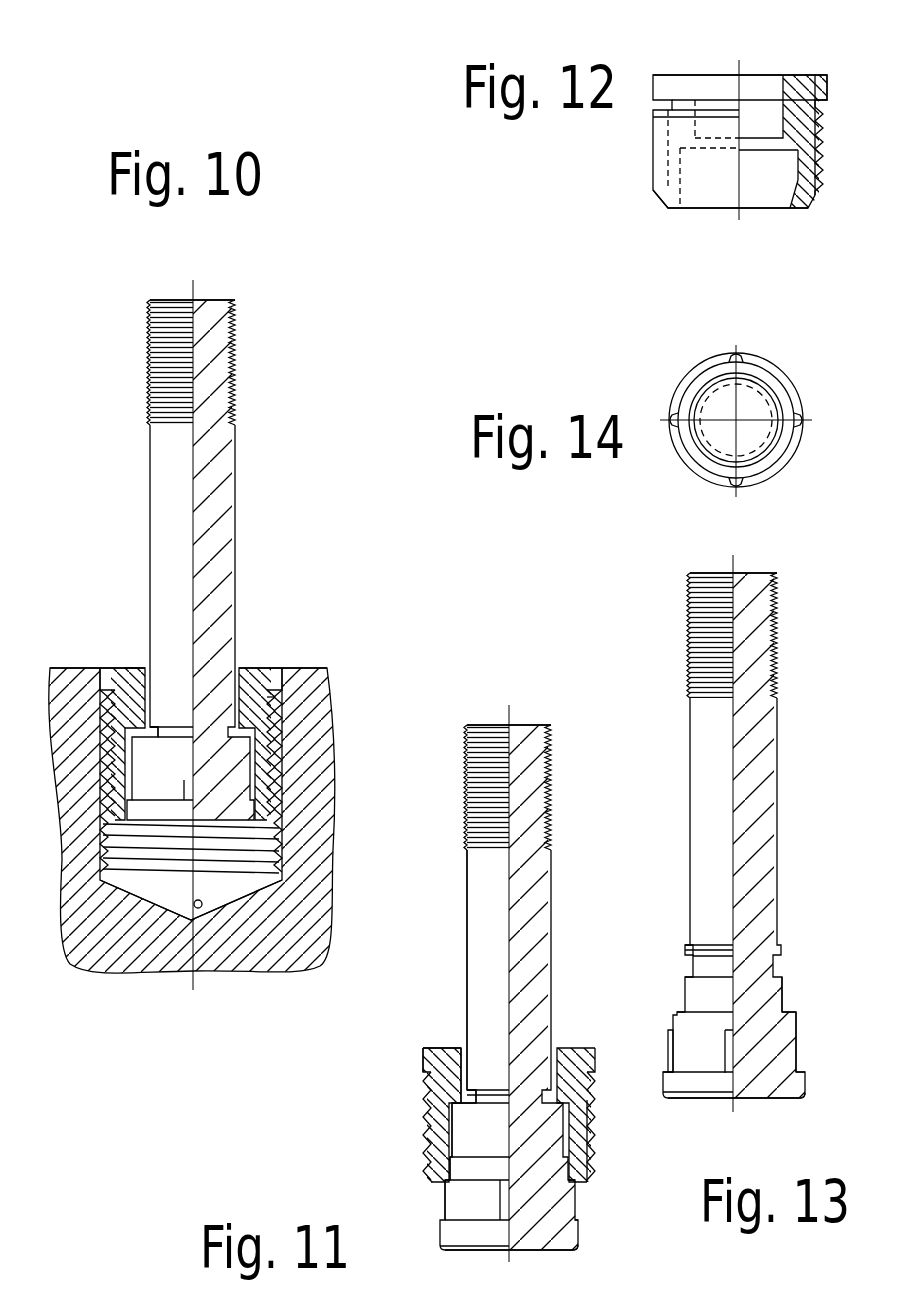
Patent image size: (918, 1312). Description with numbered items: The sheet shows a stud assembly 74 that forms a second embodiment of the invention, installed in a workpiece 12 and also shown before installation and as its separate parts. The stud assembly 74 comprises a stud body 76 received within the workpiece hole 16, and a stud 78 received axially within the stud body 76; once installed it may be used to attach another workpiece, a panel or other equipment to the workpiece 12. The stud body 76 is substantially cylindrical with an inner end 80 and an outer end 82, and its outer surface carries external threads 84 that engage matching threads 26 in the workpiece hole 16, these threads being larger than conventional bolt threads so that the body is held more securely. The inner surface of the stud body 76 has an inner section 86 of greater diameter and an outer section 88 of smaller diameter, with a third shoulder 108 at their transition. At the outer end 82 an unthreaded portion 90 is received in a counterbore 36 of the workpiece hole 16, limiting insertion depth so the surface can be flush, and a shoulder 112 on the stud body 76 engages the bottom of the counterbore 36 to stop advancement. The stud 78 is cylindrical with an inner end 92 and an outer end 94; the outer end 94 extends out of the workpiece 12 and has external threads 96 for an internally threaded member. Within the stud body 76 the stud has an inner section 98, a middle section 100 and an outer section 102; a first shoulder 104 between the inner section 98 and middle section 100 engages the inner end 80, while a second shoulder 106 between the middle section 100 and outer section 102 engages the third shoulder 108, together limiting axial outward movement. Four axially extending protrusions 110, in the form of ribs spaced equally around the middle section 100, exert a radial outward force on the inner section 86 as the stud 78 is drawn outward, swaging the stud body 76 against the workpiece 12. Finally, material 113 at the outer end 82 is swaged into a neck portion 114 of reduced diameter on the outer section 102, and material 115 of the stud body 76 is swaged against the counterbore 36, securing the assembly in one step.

In FIG. 10, the workpiece 12 is at (98, 667).
In FIG. 10, the workpiece hole 16 is at (210, 906).
In FIG. 10, the threads 26 is at (120, 866).
In FIG. 10, the counterbore 36 is at (95, 667).
In FIG. 10, the stud assembly 74 is at (122, 480).
In FIG. 11, the stud assembly 74 is at (455, 914).
In FIG. 10, the stud body 76 is at (268, 668).
In FIG. 11, the stud body 76 is at (588, 1050).
In FIG. 12, the stud body 76 is at (653, 158).
In FIG. 11, the stud 78 is at (466, 964).
In FIG. 14, the stud 78 is at (753, 378).
In FIG. 13, the stud 78 is at (692, 776).
In FIG. 11, the inner end 80 is at (448, 1182).
In FIG. 12, the inner end 80 is at (708, 208).
In FIG. 10, the outer end 82 is at (113, 666).
In FIG. 11, the outer end 82 is at (452, 1047).
In FIG. 12, the outer end 82 is at (722, 73).
In FIG. 11, the external threads 84 is at (590, 1134).
In FIG. 12, the external threads 84 is at (822, 155).
In FIG. 12, the inner section 86 is at (797, 182).
In FIG. 12, the outer section 88 is at (783, 82).
In FIG. 11, the unthreaded portion 90 is at (425, 1051).
In FIG. 12, the unthreaded portion 90 is at (827, 80).
In FIG. 11, the inner end 92 is at (478, 1251).
In FIG. 13, the inner end 92 is at (755, 1100).
In FIG. 10, the outer end 94 is at (170, 299).
In FIG. 11, the outer end 94 is at (508, 722).
In FIG. 13, the outer end 94 is at (715, 573).
In FIG. 10, the external threads 96 is at (153, 385).
In FIG. 11, the external threads 96 is at (470, 811).
In FIG. 13, the external threads 96 is at (695, 656).
In FIG. 11, the inner section 98 is at (580, 1242).
In FIG. 13, the inner section 98 is at (805, 1092).
In FIG. 11, the middle section 100 is at (468, 1177).
In FIG. 13, the middle section 100 is at (796, 1019).
In FIG. 11, the outer section 102 is at (563, 1148).
In FIG. 13, the outer section 102 is at (783, 988).
In FIG. 11, the first shoulder 104 is at (580, 1219).
In FIG. 13, the first shoulder 104 is at (806, 1071).
In FIG. 11, the second shoulder 106 is at (450, 1140).
In FIG. 13, the second shoulder 106 is at (786, 1010).
In FIG. 11, the third shoulder 108 is at (425, 1084).
In FIG. 12, the third shoulder 108 is at (787, 149).
In FIG. 11, the protrusions 110 is at (446, 1198).
In FIG. 14, the protrusions 110 is at (730, 360).
In FIG. 13, the protrusions 110 is at (671, 1030).
In FIG. 10, the shoulder 112 is at (272, 698).
In FIG. 12, the shoulder 112 is at (825, 105).
In FIG. 10, the material 113 is at (273, 686).
In FIG. 10, the neck portion 114 is at (210, 672).
In FIG. 11, the neck portion 114 is at (578, 1110).
In FIG. 13, the neck portion 114 is at (692, 963).
In FIG. 10, the material 115 is at (131, 668).